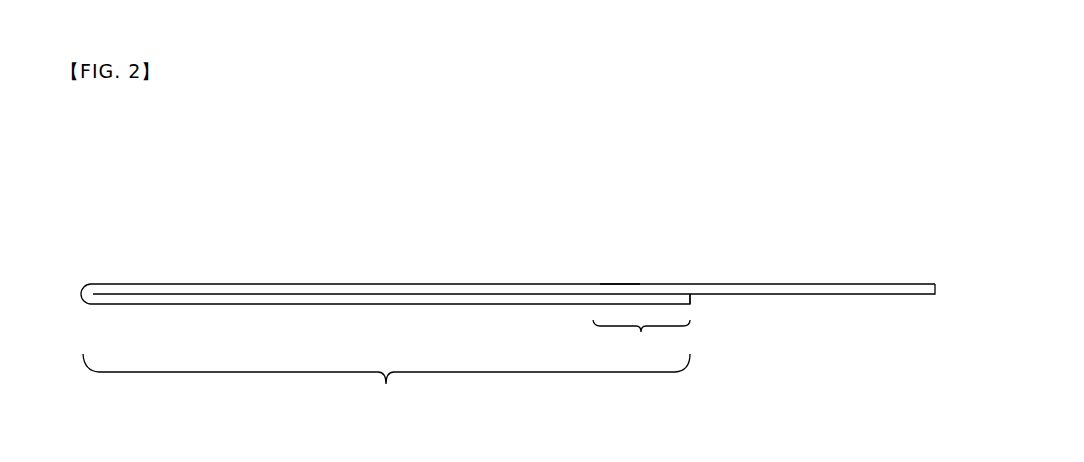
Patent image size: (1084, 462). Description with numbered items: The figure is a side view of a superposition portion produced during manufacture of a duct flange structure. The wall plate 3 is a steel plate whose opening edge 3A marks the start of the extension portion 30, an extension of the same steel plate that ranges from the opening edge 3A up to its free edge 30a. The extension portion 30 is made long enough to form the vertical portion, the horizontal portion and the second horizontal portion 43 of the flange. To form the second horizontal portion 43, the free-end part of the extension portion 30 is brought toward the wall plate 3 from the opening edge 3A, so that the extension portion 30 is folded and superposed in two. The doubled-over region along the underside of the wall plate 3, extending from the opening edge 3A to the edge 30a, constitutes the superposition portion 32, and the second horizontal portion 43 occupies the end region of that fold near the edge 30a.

The wall plate 3 is at (813, 283).
The opening edge 3A is at (593, 284).
The extension portion 30 is at (289, 283).
The edge 30a is at (692, 300).
The superposition portion 32 is at (386, 384).
The second horizontal portion 43 is at (641, 339).